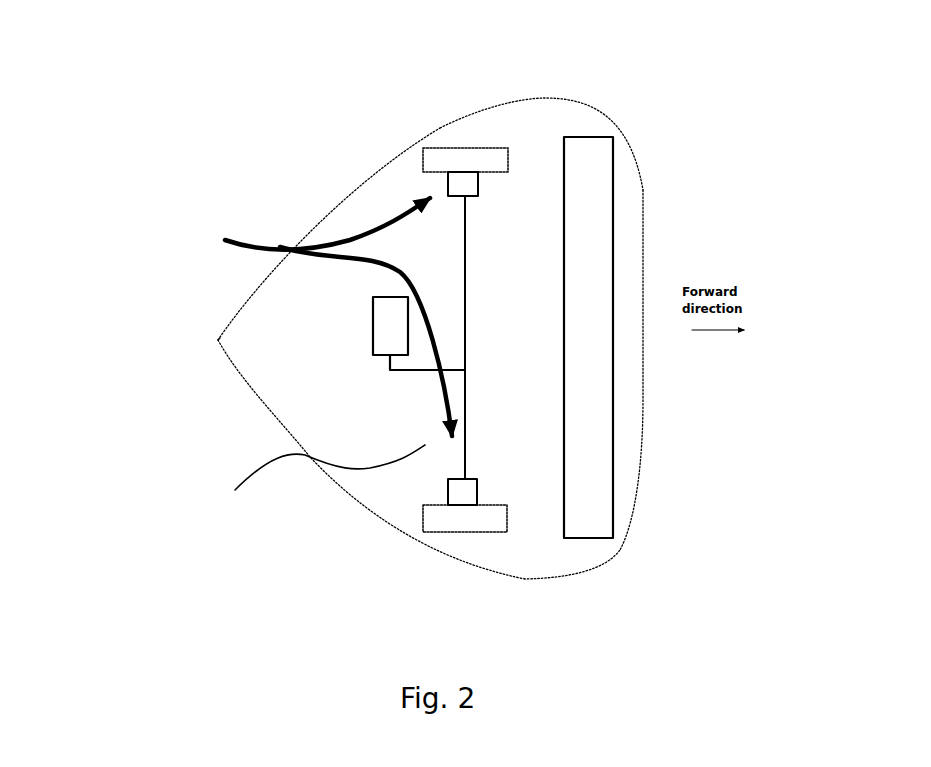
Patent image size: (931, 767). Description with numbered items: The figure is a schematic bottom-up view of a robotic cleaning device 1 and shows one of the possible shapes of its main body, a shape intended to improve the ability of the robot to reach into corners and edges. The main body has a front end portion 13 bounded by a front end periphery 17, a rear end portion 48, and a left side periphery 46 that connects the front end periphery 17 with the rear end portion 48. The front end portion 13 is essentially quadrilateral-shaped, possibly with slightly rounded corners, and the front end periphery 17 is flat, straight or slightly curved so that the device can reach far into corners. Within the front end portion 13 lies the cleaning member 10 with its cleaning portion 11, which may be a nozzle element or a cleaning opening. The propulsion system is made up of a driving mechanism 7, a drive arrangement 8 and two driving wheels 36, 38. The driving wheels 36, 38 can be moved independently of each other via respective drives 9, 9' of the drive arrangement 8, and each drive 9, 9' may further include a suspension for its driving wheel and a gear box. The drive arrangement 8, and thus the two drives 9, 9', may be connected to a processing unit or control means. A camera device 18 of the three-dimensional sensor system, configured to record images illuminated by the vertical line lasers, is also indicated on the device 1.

The robotic cleaning device 1 is at (213, 131).
The driving mechanism 7 is at (332, 317).
The drive arrangement 8 is at (381, 297).
The drive 9 is at (460, 261).
The drive 9' is at (512, 558).
The cleaning member 10 is at (618, 258).
The cleaning portion 11 is at (697, 390).
The front end portion 13 is at (550, 127).
The front end periphery 17 is at (640, 467).
The camera device 18 is at (340, 190).
The driving wheel 36 is at (450, 157).
The driving wheel 38 is at (448, 523).
The left side periphery 46 is at (353, 500).
The rear end portion 48 is at (282, 306).